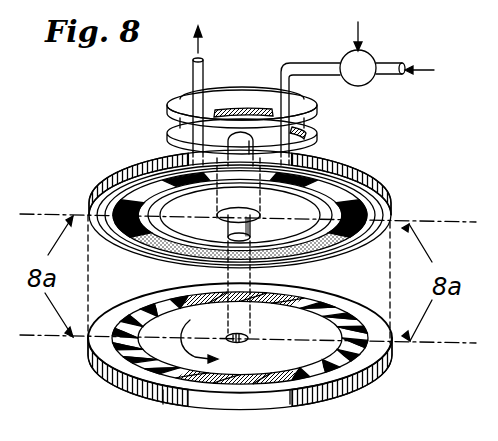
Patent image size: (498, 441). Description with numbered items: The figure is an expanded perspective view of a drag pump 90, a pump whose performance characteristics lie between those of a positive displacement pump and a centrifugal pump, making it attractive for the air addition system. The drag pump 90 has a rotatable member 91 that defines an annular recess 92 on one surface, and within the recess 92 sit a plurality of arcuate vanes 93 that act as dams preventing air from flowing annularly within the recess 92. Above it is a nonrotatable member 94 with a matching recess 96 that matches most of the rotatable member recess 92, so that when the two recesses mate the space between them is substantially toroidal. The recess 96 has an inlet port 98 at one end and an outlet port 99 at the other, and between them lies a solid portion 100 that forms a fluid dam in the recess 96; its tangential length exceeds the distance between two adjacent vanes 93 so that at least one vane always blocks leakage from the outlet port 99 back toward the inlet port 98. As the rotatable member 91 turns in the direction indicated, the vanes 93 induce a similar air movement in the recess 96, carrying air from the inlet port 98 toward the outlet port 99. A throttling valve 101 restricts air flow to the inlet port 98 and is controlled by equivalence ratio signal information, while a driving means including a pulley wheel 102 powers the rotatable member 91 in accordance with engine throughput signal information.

The drag pump 90 is at (92, 165).
The rotatable member 91 is at (373, 376).
The annular recess 92 is at (330, 314).
The arcuate vanes 93 is at (138, 310).
The nonrotatable member 94 is at (394, 183).
The matching recess 96 is at (355, 228).
The inlet port 98 is at (321, 63).
The outlet port 99 is at (193, 84).
The solid portion 100 is at (259, 182).
The throttling valve 101 is at (368, 53).
The pulley wheel 102 is at (221, 95).